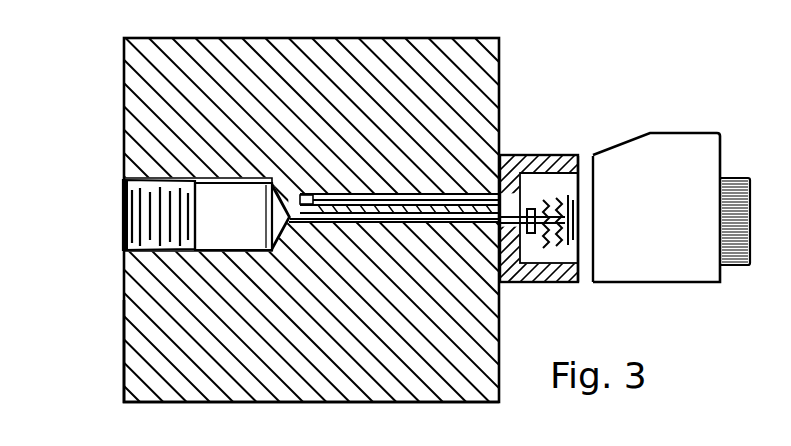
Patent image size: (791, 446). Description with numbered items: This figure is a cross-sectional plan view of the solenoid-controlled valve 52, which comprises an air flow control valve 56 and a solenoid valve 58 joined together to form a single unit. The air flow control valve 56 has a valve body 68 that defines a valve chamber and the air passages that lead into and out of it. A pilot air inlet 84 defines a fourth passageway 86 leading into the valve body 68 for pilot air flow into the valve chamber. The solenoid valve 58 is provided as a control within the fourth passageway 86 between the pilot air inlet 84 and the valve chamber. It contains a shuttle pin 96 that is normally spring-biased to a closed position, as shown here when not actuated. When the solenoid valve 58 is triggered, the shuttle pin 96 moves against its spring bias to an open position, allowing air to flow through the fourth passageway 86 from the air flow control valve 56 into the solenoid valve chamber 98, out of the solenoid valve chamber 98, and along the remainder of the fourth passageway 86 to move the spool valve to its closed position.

The solenoid-controlled valve 52 is at (515, 104).
The air flow control valve 56 is at (112, 71).
The solenoid valve 58 is at (630, 228).
The valve body 68 is at (123, 322).
The pilot air inlet 84 is at (114, 168).
The fourth passageway 86 is at (262, 244).
The shuttle pin 96 is at (556, 256).
The solenoid valve chamber 98 is at (541, 178).